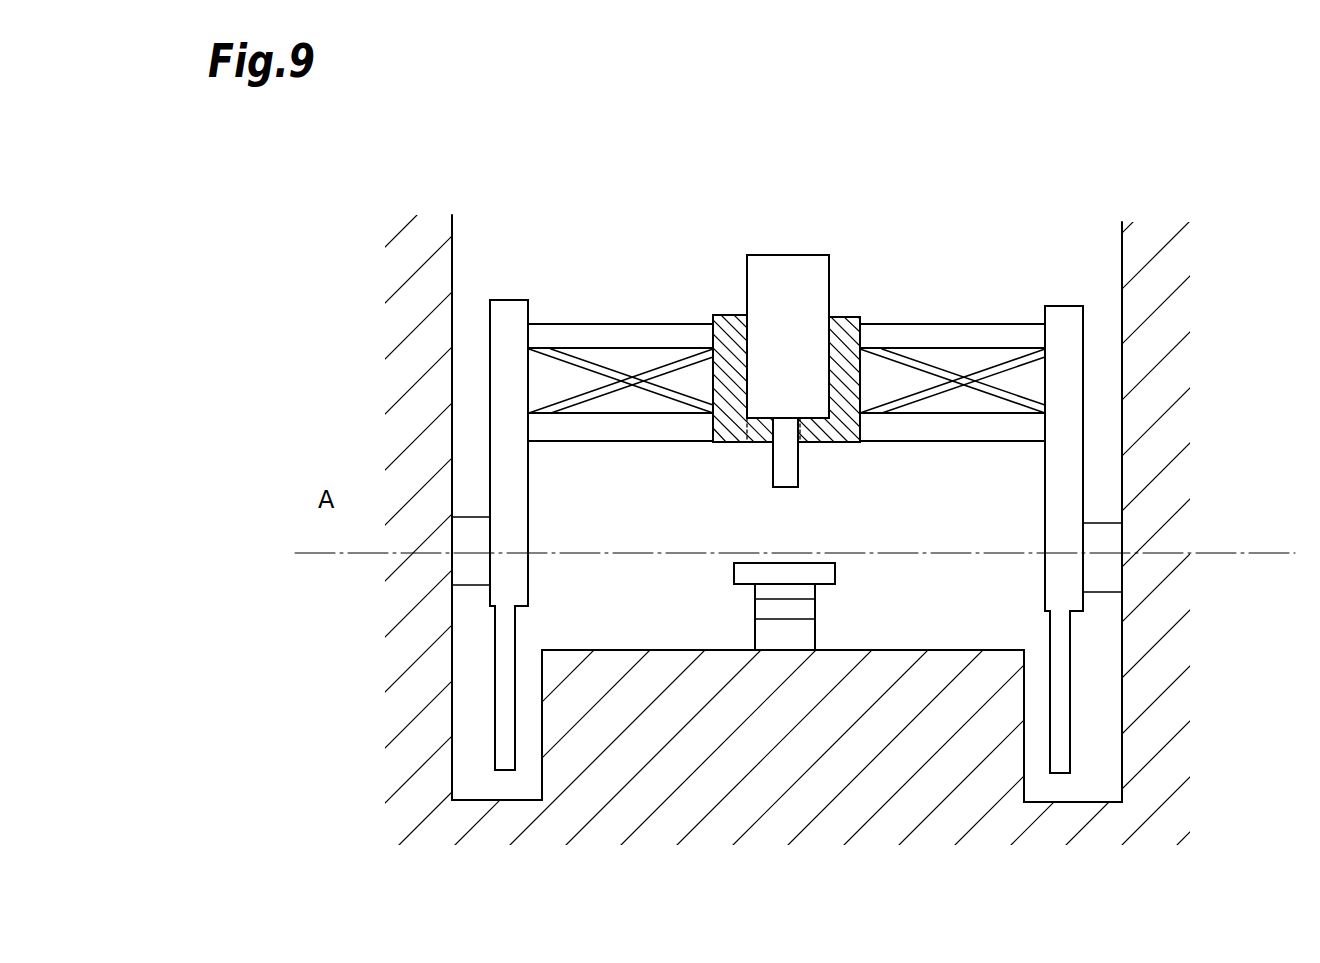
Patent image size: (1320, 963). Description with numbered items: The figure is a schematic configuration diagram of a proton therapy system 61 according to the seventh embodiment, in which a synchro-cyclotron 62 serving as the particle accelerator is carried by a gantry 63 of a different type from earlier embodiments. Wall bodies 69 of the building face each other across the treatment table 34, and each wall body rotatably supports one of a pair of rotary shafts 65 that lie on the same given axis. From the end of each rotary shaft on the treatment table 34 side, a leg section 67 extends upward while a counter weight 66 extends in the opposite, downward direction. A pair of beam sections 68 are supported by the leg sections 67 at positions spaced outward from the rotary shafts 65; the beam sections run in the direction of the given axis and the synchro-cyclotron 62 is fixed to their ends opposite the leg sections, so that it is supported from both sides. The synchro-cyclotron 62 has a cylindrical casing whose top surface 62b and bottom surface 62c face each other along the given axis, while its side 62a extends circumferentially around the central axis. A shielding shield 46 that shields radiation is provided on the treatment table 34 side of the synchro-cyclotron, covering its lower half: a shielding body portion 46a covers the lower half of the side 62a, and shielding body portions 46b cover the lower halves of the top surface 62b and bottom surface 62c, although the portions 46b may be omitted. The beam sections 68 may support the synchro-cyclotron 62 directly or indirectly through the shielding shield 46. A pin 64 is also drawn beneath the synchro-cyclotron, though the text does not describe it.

The proton therapy system 61 is at (493, 176).
The synchro-cyclotron 62 is at (795, 284).
The side 62a is at (814, 436).
The top surface 62b is at (734, 366).
The bottom surface 62c is at (842, 342).
The shielding shield 46 is at (852, 352).
The shielding body portion 46a is at (748, 450).
The shielding body portions 46b is at (705, 340).
The gantry 63 is at (609, 295).
The pin 64 is at (785, 478).
The rotary shafts 65 is at (480, 525).
The counter weights 66 is at (500, 722).
The leg sections 67 is at (505, 338).
The beam sections 68 is at (993, 335).
The wall bodies 69 is at (453, 237).
The treatment table 34 is at (836, 572).